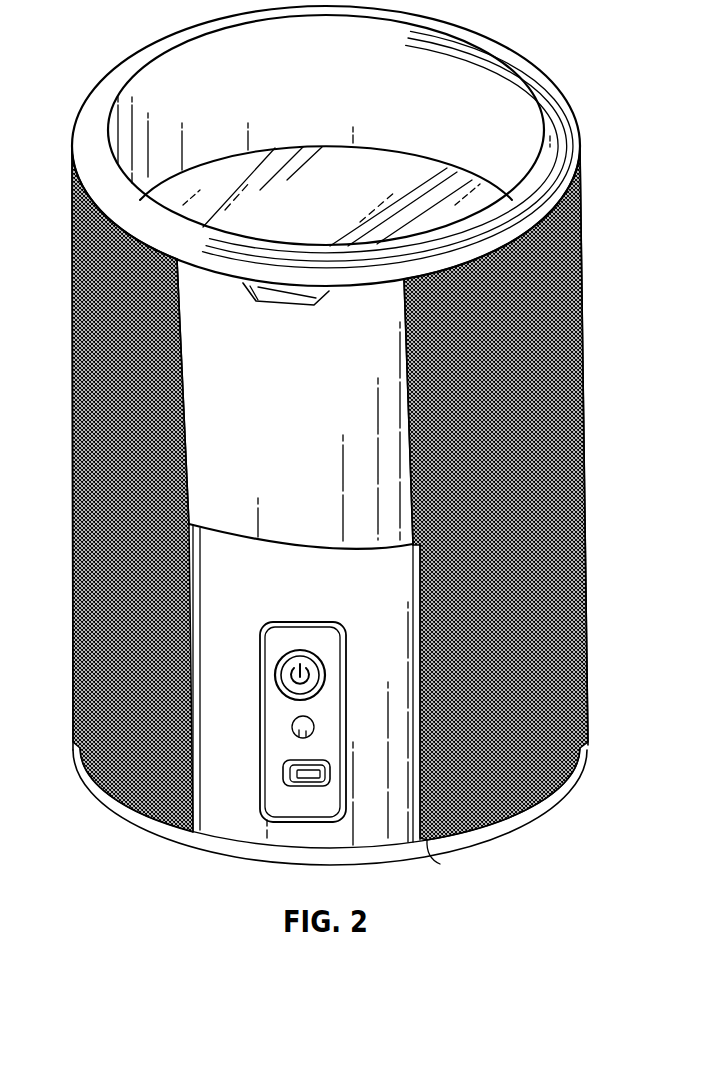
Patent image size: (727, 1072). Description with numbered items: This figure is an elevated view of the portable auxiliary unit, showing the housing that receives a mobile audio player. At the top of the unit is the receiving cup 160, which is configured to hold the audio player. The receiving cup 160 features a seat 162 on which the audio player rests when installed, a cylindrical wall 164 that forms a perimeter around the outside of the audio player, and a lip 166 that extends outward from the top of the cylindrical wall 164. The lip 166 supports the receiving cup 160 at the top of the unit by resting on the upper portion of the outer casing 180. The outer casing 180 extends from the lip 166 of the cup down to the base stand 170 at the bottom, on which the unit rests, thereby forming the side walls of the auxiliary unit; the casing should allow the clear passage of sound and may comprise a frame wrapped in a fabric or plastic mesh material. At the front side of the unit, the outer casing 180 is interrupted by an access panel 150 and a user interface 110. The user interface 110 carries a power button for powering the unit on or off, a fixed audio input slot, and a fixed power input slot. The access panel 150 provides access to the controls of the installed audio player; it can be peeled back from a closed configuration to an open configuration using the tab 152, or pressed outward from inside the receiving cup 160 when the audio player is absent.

The user interface 110 is at (327, 628).
The access panel 150 is at (390, 390).
The tab 152 is at (290, 305).
The receiving cup 160 is at (558, 82).
The seat 162 is at (328, 230).
The cylindrical wall 164 is at (333, 91).
The lip 166 is at (109, 80).
The base stand 170 is at (558, 821).
The outer casing 180 is at (587, 411).